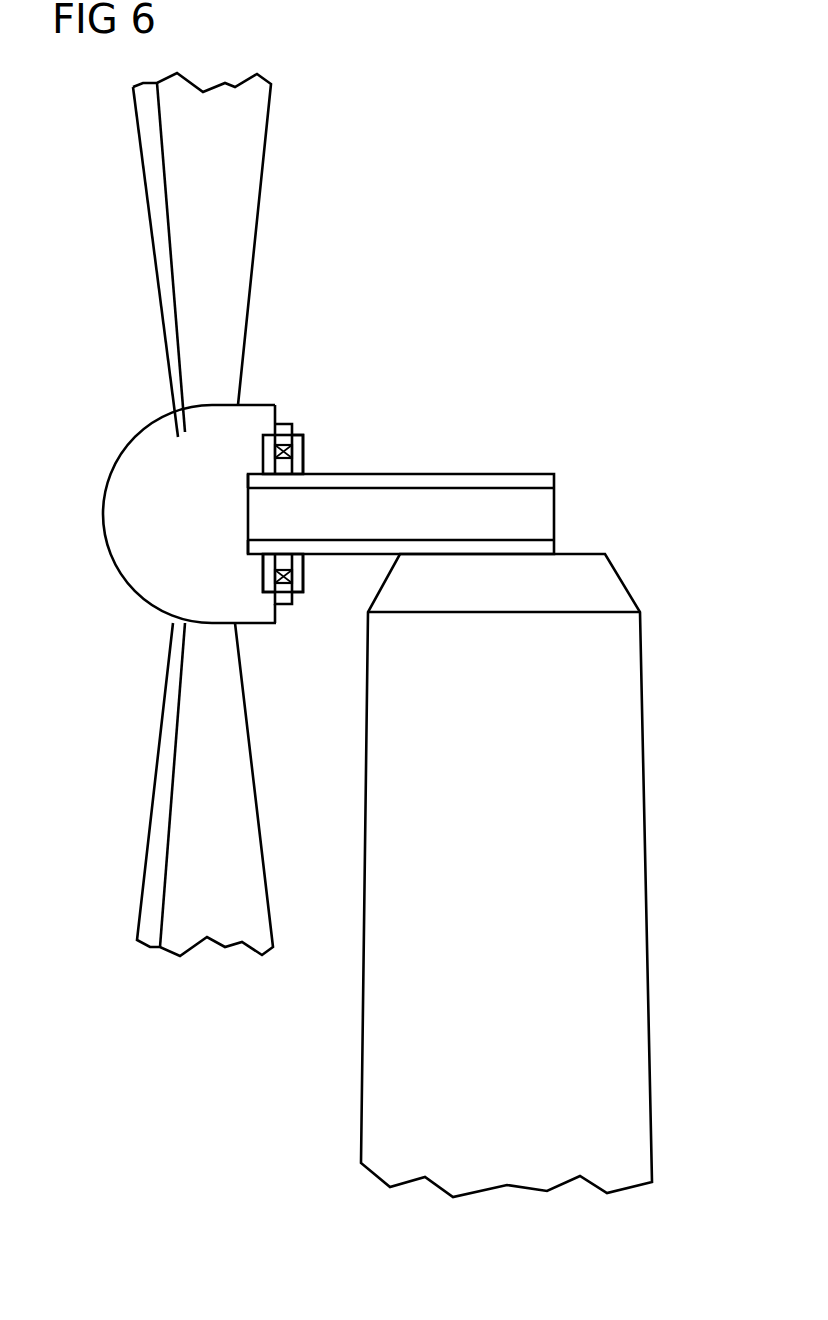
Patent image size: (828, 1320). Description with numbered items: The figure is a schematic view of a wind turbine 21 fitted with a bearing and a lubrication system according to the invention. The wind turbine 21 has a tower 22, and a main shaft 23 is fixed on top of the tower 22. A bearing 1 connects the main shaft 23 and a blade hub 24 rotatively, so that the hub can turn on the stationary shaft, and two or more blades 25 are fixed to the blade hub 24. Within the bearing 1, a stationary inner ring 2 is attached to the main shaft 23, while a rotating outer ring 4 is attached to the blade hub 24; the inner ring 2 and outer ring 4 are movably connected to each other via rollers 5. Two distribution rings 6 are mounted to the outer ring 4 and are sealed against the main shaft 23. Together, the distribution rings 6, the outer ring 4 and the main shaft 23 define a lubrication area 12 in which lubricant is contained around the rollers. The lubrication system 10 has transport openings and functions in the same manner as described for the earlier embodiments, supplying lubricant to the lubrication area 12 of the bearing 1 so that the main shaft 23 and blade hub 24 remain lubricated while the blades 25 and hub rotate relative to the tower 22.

The bearing 1 is at (327, 400).
The stationary inner ring 2 is at (285, 467).
The rotating outer ring 4 is at (282, 434).
The rollers 5 is at (302, 442).
The distribution rings 6 is at (262, 577).
The lubrication system 10 is at (292, 682).
The lubrication area 12 is at (296, 592).
The wind turbine 21 is at (477, 875).
The tower 22 is at (637, 857).
The main shaft 23 is at (505, 480).
The blade hub 24 is at (115, 520).
The blades 25 is at (165, 292).